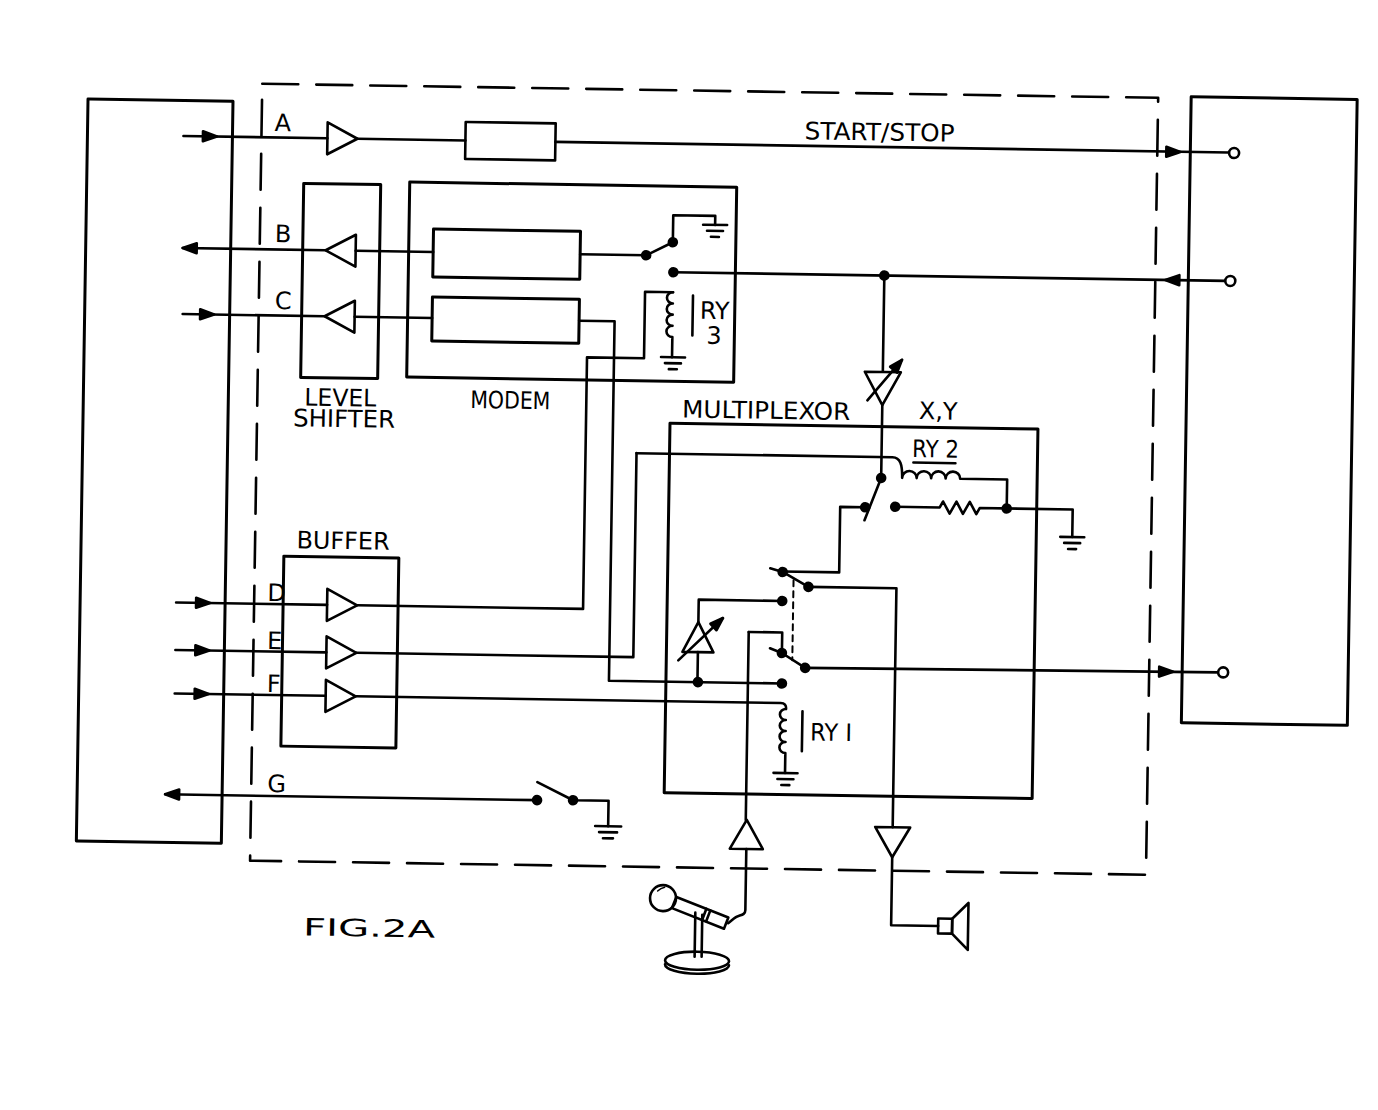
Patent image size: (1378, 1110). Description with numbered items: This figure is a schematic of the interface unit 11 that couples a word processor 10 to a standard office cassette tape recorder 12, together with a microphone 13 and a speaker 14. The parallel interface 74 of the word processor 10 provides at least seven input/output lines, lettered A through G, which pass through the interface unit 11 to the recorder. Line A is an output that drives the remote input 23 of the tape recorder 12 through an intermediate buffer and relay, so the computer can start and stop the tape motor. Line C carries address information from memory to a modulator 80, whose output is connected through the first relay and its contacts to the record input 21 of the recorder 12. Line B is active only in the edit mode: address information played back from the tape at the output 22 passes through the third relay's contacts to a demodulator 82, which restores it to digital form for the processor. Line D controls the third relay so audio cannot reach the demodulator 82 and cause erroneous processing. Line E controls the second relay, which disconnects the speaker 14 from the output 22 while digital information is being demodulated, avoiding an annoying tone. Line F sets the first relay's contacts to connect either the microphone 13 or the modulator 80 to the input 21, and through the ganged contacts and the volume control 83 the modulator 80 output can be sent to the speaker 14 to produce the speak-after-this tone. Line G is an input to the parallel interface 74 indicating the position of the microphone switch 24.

The word processor 10 is at (225, 96).
The interface unit 11 is at (750, 52).
The tape recorder 12 is at (1312, 79).
The microphone 13 is at (668, 899).
The speaker 14 is at (983, 918).
The record input 21 is at (1241, 650).
The output 22 is at (1240, 257).
The remote input 23 is at (1241, 130).
The microphone switch 24 is at (571, 780).
The parallel interface 74 is at (174, 488).
The modulator 80 is at (504, 336).
The demodulator 82 is at (547, 222).
The volume control 83 is at (692, 626).